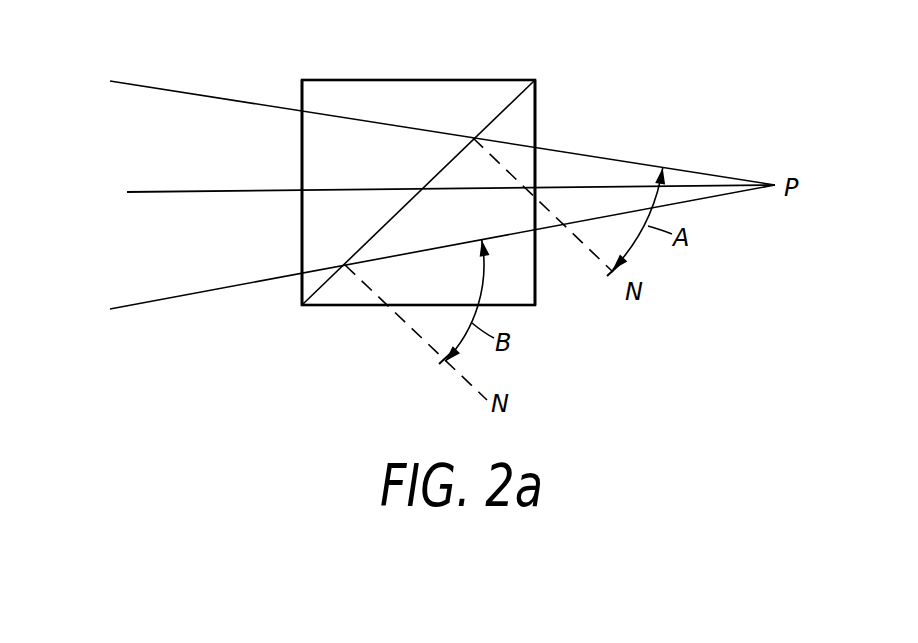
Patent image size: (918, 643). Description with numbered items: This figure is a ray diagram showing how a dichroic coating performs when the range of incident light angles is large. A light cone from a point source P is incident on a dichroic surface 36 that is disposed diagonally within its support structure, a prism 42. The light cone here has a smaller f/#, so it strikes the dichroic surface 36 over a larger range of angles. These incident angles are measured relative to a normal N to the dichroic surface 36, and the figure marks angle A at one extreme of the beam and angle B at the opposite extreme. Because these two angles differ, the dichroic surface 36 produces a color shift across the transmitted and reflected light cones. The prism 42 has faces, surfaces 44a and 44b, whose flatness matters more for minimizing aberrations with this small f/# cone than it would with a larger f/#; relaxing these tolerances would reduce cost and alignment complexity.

The prism 42 is at (335, 85).
The dichroic surface 36 is at (498, 110).
The surface 44a is at (301, 161).
The surface 44b is at (537, 280).